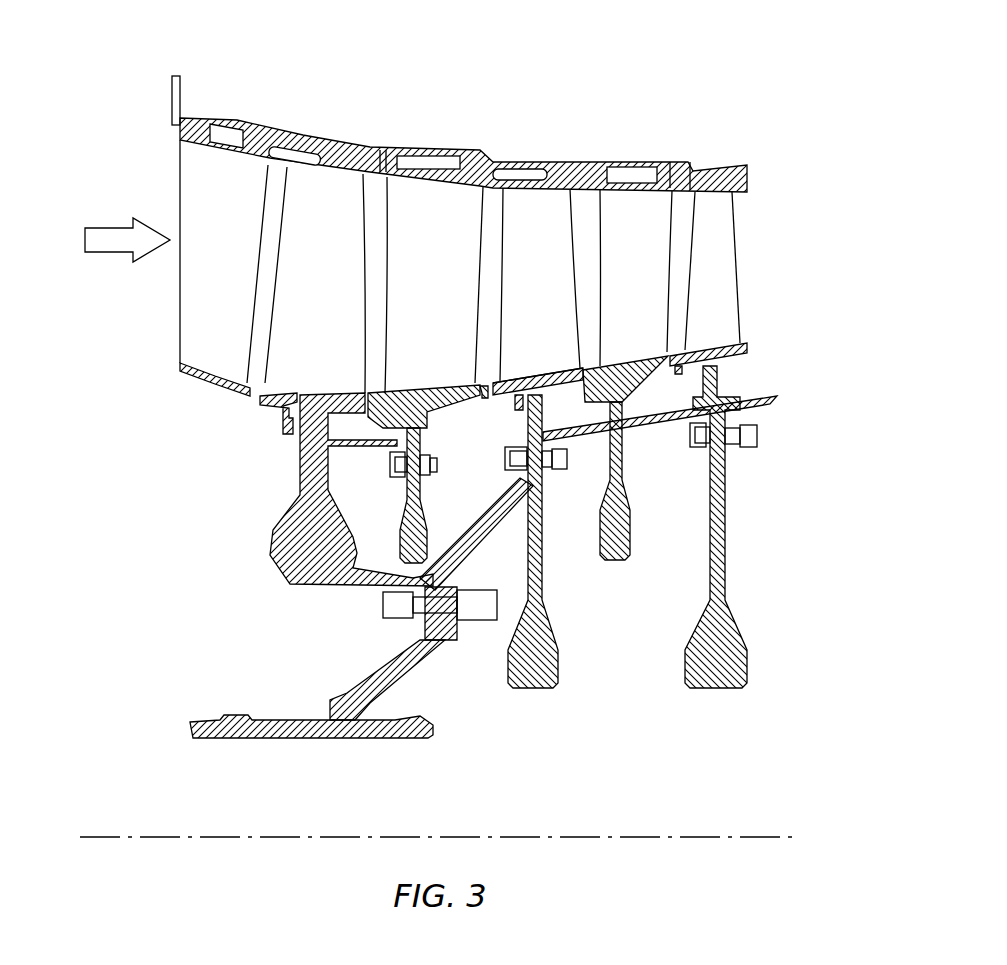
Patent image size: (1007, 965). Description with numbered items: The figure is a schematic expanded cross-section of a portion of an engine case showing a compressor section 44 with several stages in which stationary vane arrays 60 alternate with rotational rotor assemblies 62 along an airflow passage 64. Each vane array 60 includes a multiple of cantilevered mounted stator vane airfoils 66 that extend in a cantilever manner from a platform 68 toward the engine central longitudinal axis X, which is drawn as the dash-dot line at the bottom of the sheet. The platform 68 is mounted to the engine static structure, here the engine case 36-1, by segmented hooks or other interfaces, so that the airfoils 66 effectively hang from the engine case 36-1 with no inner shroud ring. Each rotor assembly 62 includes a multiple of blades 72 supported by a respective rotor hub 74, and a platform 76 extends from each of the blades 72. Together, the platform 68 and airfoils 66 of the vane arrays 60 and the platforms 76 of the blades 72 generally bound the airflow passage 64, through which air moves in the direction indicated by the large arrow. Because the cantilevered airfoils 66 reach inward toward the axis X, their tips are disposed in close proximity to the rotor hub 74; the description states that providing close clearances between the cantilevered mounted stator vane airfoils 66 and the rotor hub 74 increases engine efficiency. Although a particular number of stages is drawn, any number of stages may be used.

The compressor section 44 is at (648, 70).
The engine case 36-1 is at (543, 193).
The stationary vane array 60 is at (430, 200).
The rotational rotor assembly 62 is at (320, 193).
The airflow passage 64 is at (107, 228).
The cantilevered mounted stator vane airfoil 66 is at (444, 276).
The platform 68 is at (475, 150).
The blade 72 is at (337, 297).
The rotor hub 74 is at (273, 523).
The platform 76 is at (280, 420).
The engine central longitudinal axis X is at (770, 837).